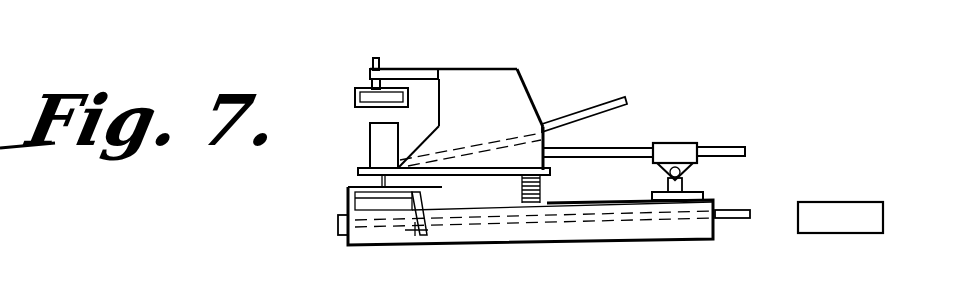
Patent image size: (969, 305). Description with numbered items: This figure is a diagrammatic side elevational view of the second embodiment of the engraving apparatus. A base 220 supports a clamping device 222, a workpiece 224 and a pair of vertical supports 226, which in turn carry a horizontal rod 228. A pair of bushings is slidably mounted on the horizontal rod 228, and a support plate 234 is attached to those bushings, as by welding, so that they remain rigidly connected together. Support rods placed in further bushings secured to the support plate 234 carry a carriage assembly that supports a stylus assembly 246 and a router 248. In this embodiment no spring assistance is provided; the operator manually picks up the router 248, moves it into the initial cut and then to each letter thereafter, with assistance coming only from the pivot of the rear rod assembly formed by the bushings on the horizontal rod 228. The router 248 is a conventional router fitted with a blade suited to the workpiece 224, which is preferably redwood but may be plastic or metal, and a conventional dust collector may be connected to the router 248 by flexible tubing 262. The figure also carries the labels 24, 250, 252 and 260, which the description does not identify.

The housing 24 is at (517, 69).
The base 220 is at (563, 233).
The clamping device 222 is at (337, 253).
The workpiece 224 is at (410, 186).
The vertical supports 226 is at (690, 185).
The horizontal rod 228 is at (690, 181).
The support plate 234 is at (655, 172).
The stylus assembly 246 is at (385, 62).
The router 248 is at (380, 149).
The spring 250 is at (566, 186).
The box 252 is at (358, 98).
The plate 260 is at (837, 225).
The flexible tubing 262 is at (597, 110).